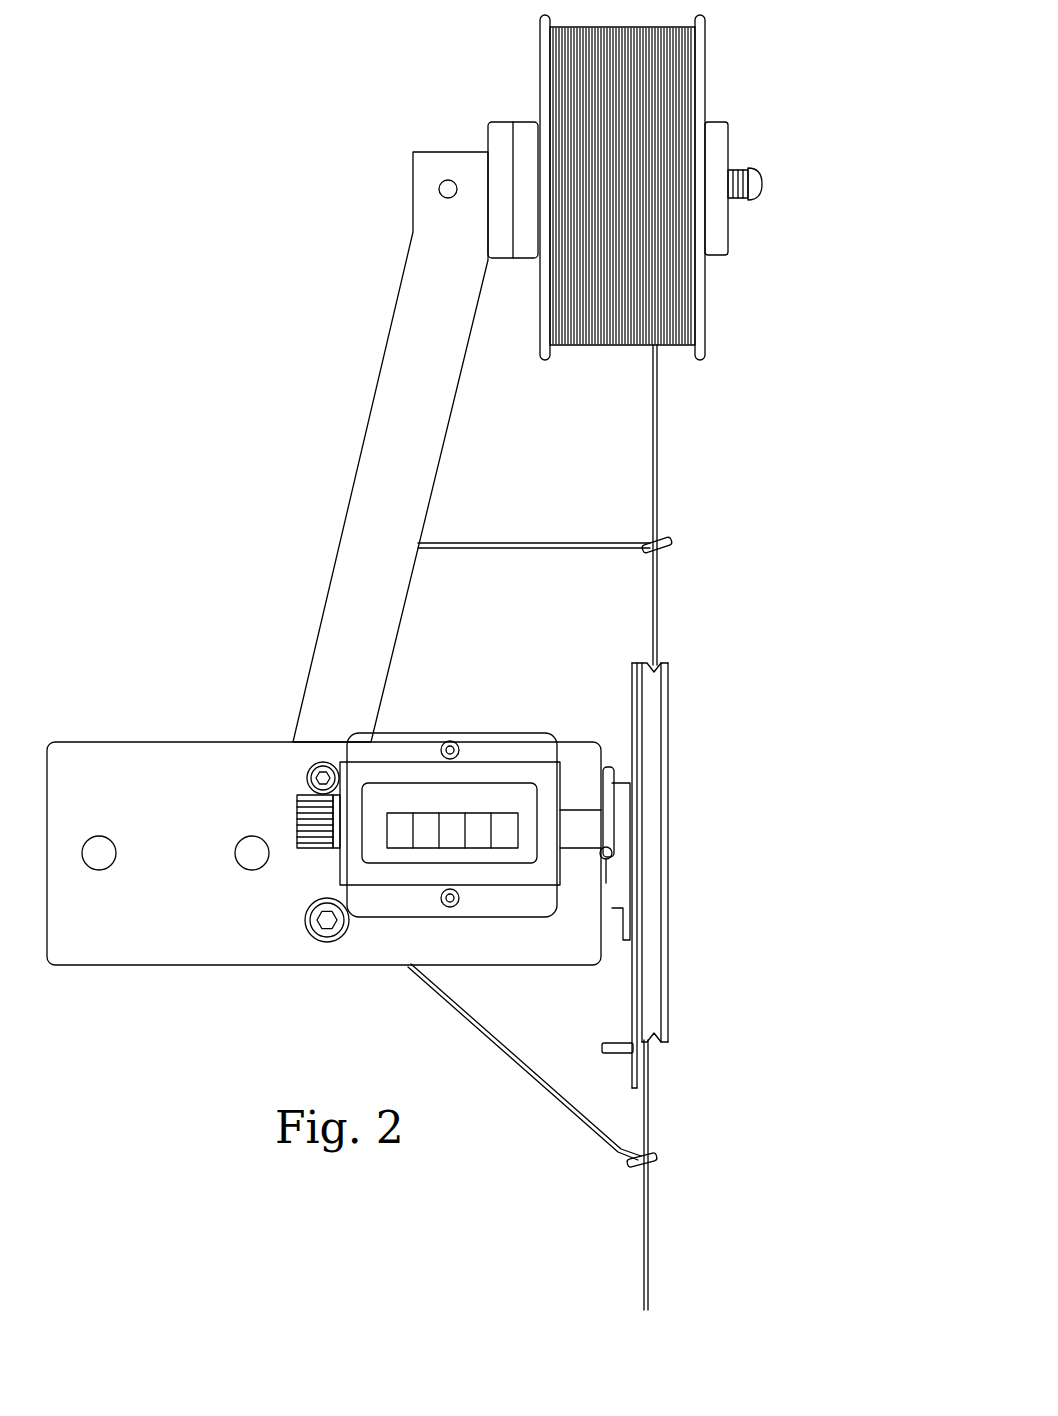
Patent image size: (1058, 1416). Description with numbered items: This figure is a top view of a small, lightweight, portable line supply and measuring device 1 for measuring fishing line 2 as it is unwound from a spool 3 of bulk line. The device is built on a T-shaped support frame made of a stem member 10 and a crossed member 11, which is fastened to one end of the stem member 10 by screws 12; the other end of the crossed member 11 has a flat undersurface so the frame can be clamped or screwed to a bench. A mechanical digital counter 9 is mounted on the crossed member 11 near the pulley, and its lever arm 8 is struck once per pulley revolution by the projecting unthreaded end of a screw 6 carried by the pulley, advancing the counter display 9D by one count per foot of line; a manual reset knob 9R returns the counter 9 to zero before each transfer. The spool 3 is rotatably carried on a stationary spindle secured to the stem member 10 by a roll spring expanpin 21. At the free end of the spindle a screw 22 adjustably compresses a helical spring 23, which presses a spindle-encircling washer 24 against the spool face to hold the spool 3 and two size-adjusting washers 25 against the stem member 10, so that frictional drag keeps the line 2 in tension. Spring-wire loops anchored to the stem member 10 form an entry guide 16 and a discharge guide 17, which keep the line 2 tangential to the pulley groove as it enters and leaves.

The line supply and measuring device 1 is at (118, 976).
The fishing line 2 is at (660, 612).
The spool 3 is at (702, 325).
The screw 6 is at (598, 1036).
The lever arm 8 is at (610, 768).
The mechanical digital counter 9 is at (450, 799).
The counter display 9D is at (422, 788).
The manual reset knob 9R is at (300, 820).
The stem member 10 is at (383, 437).
The crossed member 11 is at (240, 948).
The screws 12 is at (310, 770).
The entry guide 16 is at (672, 540).
The discharge guide 17 is at (660, 1158).
The roll spring expanpin 21 is at (439, 187).
The screw 22 is at (770, 207).
The helical spring 23 is at (742, 203).
The washer 24 is at (720, 128).
The size-adjusting washers 25 is at (500, 133).